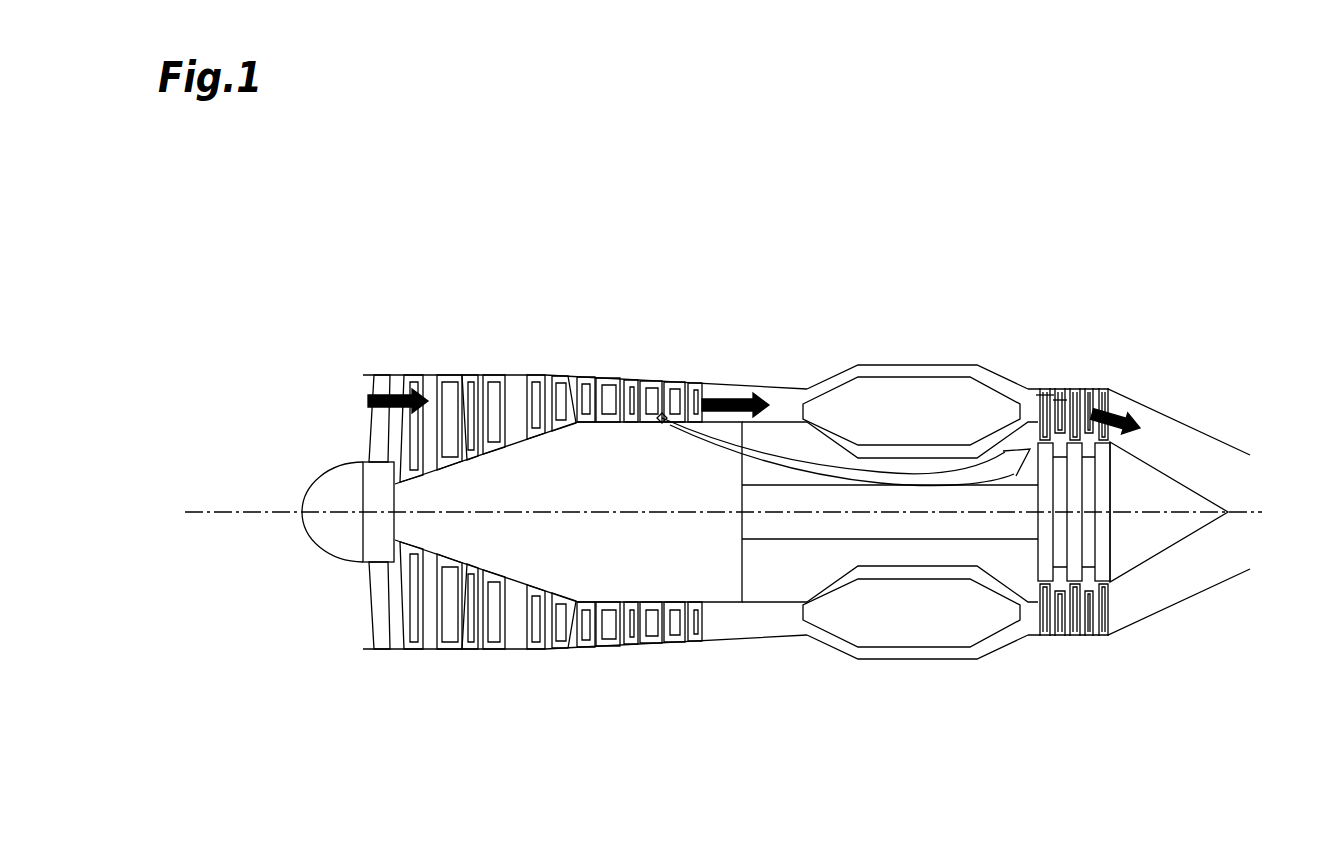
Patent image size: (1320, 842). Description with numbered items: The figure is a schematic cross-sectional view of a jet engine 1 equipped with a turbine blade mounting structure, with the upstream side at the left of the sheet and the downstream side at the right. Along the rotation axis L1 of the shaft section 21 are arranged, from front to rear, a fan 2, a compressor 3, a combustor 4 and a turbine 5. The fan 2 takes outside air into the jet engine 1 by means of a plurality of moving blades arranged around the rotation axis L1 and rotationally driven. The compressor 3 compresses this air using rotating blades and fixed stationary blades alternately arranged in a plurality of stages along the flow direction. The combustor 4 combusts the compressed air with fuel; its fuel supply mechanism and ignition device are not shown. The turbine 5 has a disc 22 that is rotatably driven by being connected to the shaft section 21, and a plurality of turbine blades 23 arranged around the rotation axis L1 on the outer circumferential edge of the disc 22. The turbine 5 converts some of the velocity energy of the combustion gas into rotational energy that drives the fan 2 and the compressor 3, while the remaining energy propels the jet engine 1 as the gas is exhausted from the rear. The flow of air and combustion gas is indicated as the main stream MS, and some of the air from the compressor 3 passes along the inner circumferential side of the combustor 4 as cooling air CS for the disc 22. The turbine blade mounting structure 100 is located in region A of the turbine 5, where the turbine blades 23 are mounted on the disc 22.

The jet engine 1 is at (930, 275).
The fan 2 is at (427, 664).
The compressor 3 is at (604, 660).
The combustor 4 is at (925, 617).
The turbine 5 is at (1117, 565).
The shaft section 21 is at (578, 478).
The disc 22 is at (1044, 553).
The turbine blades 23 is at (1043, 636).
The turbine vane / shroud component 100 is at (1031, 405).
The region A is at (1067, 400).
The cooling air CS is at (713, 452).
The main stream MS is at (362, 397).
The rotation axis L1 is at (226, 510).